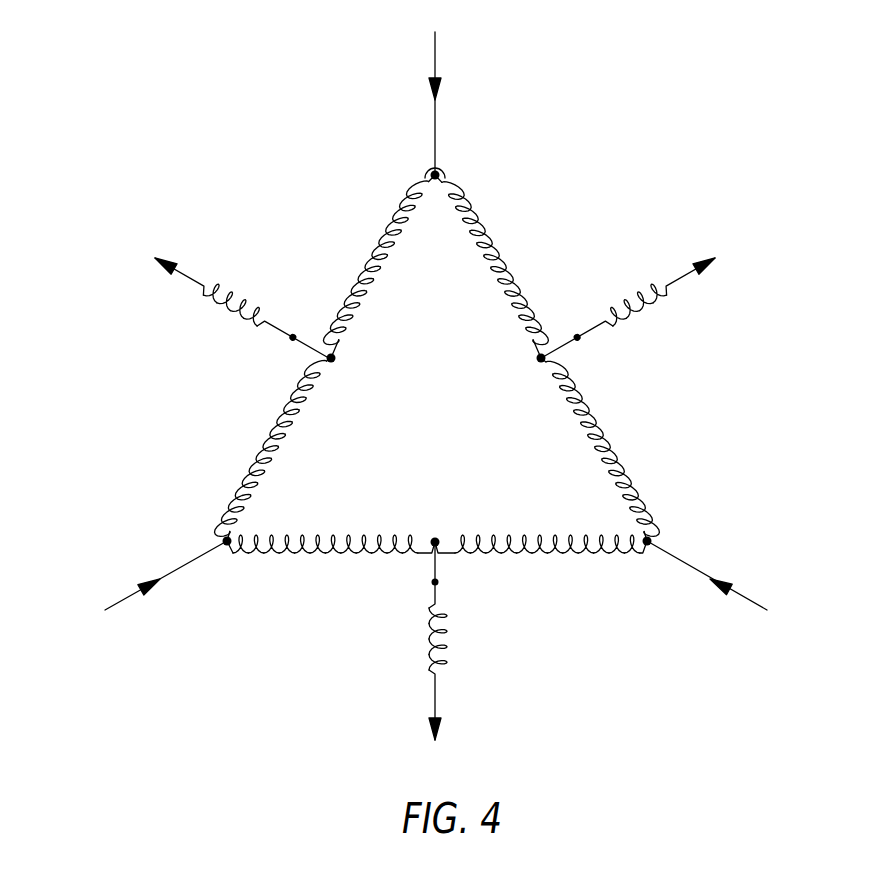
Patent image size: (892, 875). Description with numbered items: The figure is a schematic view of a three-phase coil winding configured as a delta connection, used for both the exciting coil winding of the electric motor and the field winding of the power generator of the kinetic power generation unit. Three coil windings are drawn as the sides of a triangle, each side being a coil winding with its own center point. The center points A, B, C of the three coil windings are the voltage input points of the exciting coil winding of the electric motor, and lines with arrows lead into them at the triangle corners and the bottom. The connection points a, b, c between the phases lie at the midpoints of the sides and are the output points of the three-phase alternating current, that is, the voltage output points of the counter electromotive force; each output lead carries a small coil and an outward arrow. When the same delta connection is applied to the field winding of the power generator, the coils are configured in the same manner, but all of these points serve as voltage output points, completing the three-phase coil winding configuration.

The center point A is at (153, 586).
The center point B is at (435, 90).
The center point C is at (719, 588).
The connection point a is at (232, 299).
The connection point b is at (639, 299).
The connection point c is at (437, 658).